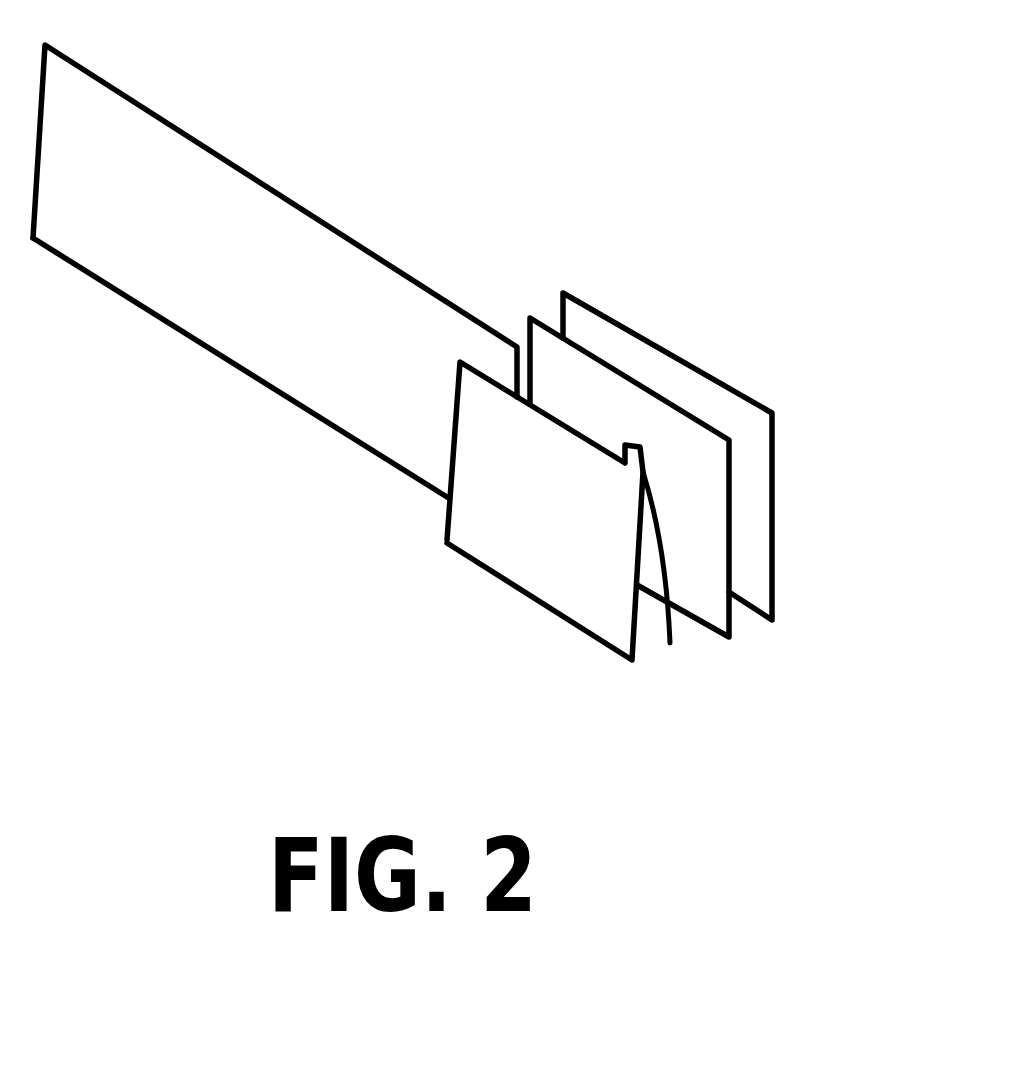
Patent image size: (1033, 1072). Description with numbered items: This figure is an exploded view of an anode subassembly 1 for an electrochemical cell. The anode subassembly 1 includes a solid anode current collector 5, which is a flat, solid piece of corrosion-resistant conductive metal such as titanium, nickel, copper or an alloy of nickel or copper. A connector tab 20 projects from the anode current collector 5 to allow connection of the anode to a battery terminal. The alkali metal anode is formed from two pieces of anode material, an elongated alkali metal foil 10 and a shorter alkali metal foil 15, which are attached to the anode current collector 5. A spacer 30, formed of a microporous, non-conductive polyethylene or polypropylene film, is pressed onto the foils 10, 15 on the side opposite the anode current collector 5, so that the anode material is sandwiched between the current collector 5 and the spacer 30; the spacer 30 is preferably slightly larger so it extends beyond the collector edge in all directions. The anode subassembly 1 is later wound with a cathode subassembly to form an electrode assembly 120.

The anode subassembly 1 is at (336, 170).
The anode current collector 5 is at (502, 511).
The elongated alkali metal foil 10 is at (357, 402).
The shorter alkali metal foil 15 is at (638, 442).
The connector tab 20 is at (675, 580).
The spacer 30 is at (731, 456).
The electrode assembly 120 is at (174, 657).